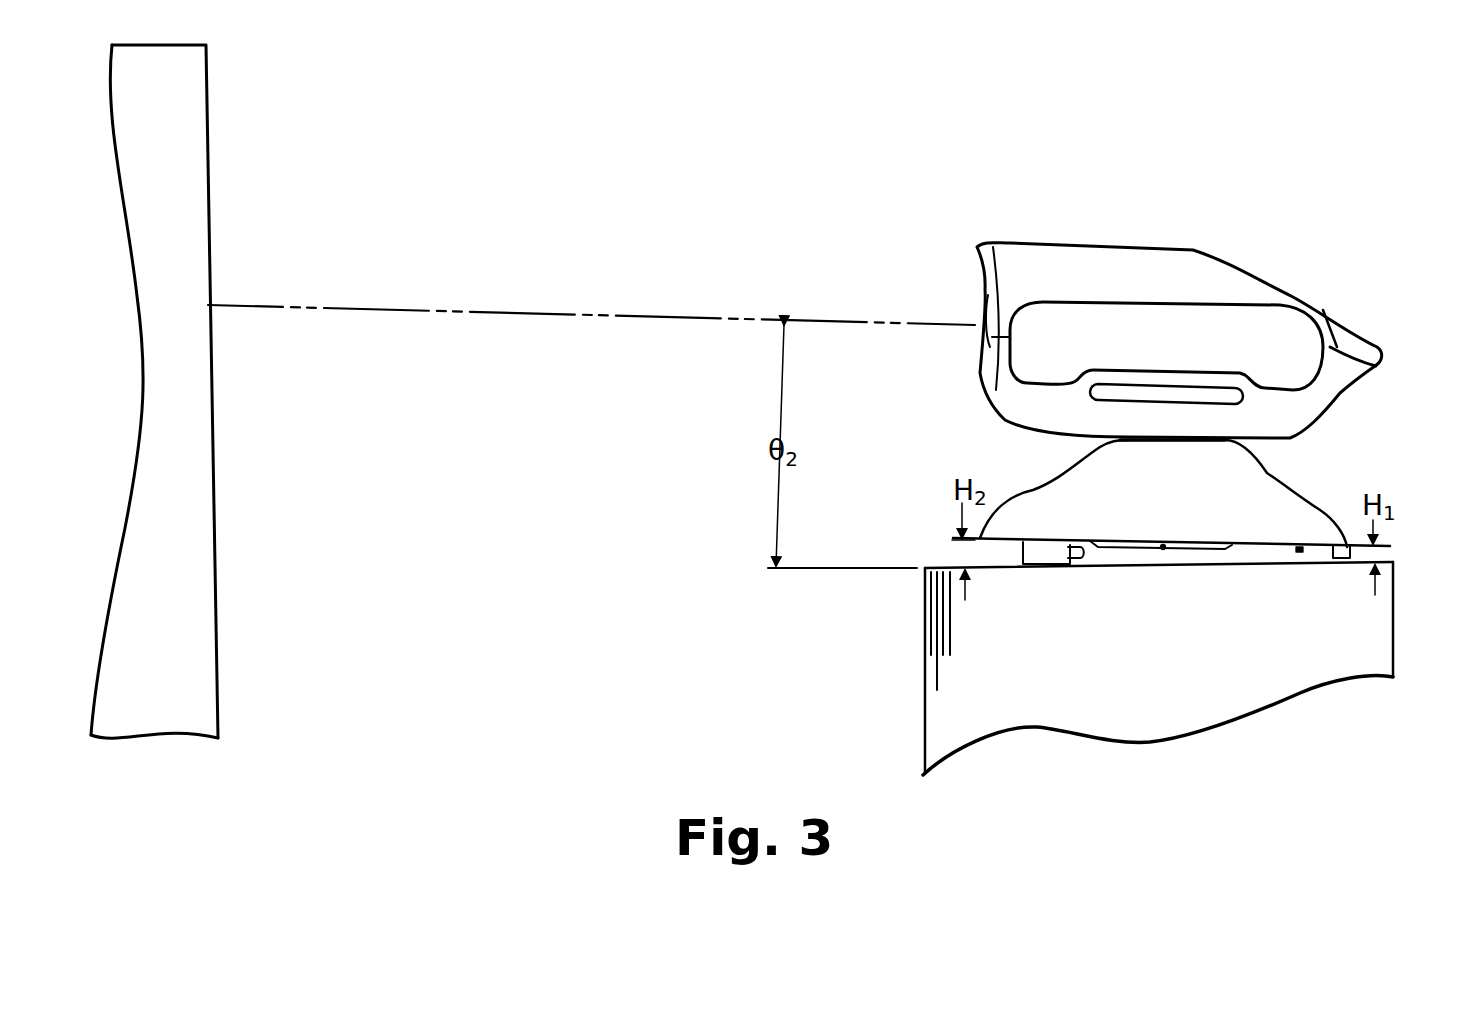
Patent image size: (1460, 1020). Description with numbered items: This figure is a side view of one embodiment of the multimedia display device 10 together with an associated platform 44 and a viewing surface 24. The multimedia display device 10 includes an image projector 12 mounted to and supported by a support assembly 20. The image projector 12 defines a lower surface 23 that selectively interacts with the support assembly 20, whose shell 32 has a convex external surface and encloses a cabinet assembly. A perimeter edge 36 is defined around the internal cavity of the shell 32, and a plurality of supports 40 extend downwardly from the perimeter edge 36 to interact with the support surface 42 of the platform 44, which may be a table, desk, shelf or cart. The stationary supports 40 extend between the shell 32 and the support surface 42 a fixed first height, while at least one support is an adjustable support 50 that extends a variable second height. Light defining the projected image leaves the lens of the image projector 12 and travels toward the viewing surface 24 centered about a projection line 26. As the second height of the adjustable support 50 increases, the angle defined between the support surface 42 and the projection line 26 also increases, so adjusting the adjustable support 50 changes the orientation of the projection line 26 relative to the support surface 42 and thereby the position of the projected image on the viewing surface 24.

The multimedia display device 10 is at (866, 156).
The image projector 12 is at (1356, 290).
The support assembly 20 is at (1399, 465).
The lower surface 23 is at (1250, 432).
The viewing surface 24 is at (211, 194).
The projection line 26 is at (510, 313).
The shell 32 is at (1280, 498).
The perimeter edge 36 is at (1277, 548).
The support 40 is at (1350, 551).
The support surface 42 is at (922, 532).
The platform 44 is at (960, 673).
The adjustable support 50 is at (1020, 486).